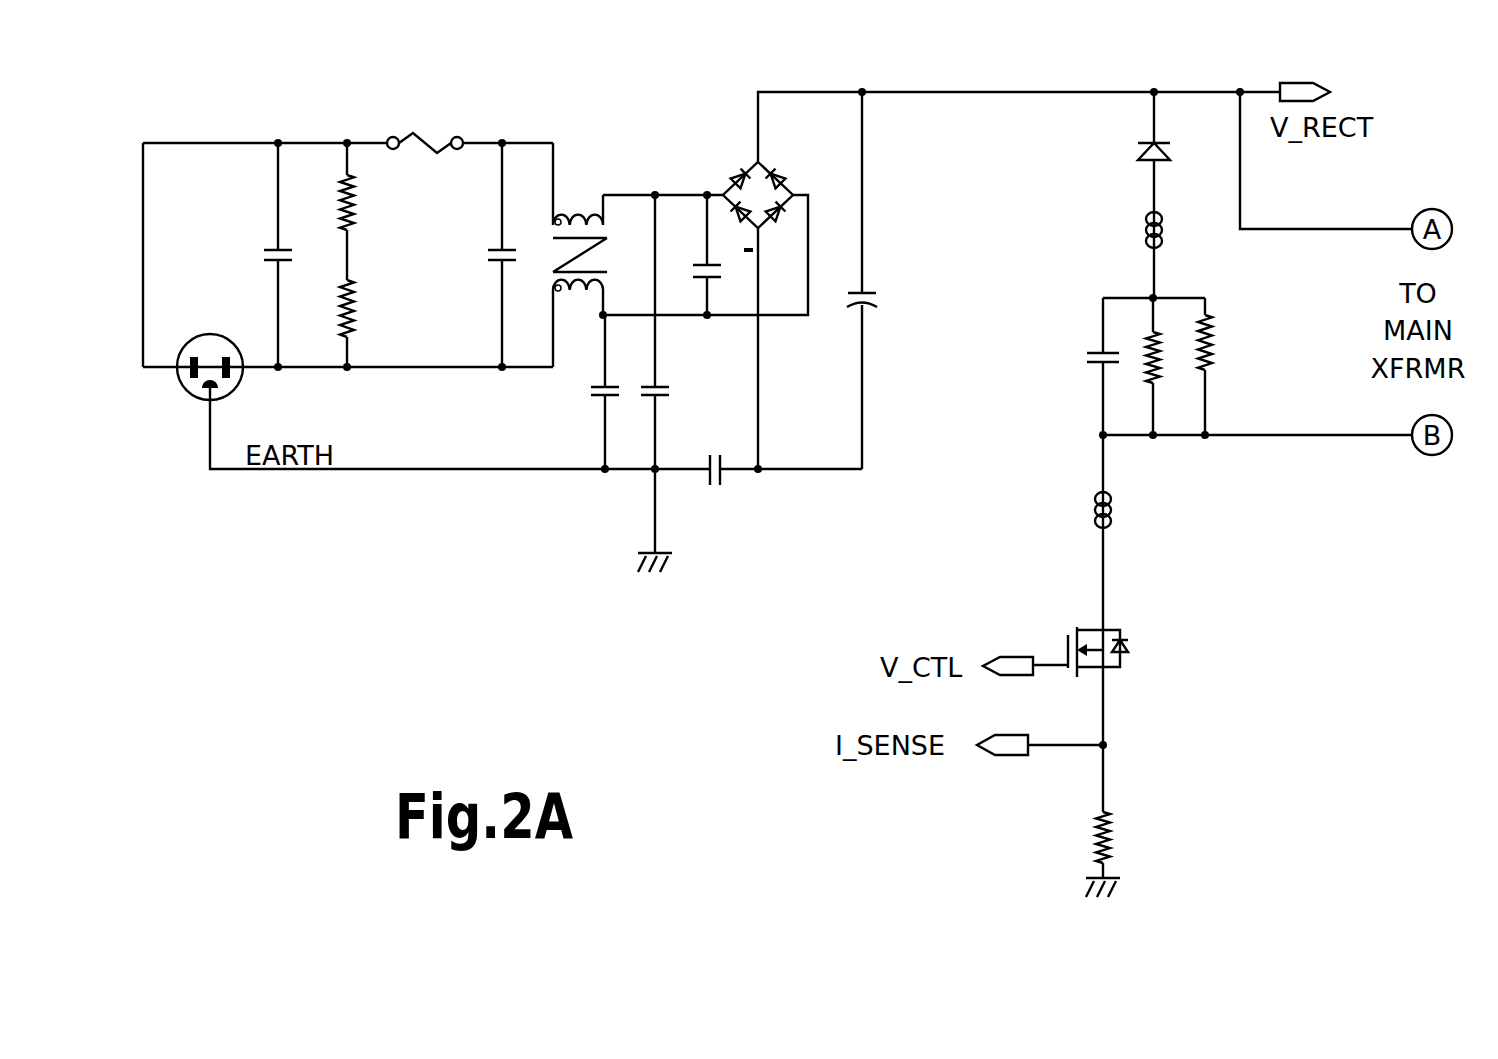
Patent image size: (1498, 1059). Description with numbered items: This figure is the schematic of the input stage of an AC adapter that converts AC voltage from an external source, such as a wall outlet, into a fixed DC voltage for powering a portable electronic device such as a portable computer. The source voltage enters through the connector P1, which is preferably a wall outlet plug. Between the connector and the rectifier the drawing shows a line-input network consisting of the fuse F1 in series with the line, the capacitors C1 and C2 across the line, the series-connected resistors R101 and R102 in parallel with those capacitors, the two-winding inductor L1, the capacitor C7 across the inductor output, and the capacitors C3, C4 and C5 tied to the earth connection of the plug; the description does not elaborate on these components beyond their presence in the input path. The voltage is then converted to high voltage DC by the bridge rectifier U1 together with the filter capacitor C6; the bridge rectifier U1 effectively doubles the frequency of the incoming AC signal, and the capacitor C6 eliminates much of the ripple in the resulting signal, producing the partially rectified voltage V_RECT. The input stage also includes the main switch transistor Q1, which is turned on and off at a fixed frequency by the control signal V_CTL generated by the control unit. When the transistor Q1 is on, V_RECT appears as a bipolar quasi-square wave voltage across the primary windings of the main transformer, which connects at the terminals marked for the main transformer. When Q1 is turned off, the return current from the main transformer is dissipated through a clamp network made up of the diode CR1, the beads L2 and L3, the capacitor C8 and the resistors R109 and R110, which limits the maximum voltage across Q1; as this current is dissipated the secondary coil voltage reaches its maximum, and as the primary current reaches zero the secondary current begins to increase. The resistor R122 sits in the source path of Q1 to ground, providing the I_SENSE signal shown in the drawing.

The connector P1 is at (228, 370).
The line filter capacitor 0.15uF C1 is at (228, 255).
The bleeder resistor 1M R101 is at (387, 211).
The bleeder resistor 1M R102 is at (387, 323).
The line filter capacitor 0.1uF C2 is at (460, 255).
The fuse 3.15A F1 is at (424, 113).
The common-mode choke / line filter inductor L1 is at (580, 255).
The filter capacitor .033uF C7 is at (701, 276).
The Y capacitor 4700pF C3 is at (553, 392).
The Y capacitor 4700pF C4 is at (701, 374).
The capacitor 1000pF C5 is at (735, 501).
The bridge rectifier U1 is at (734, 179).
The filter capacitor C6 is at (910, 290).
The clamp network diode CR1 is at (1094, 144).
The clamp network inductor L2 is at (1110, 235).
The clamp network capacitor C8 is at (1061, 366).
The clamp network resistor R109 is at (1168, 397).
The clamp network resistor R110 is at (1245, 366).
The clamp network inductor L3 is at (1058, 500).
The main switch transistor Q1 is at (1028, 616).
The current sense resistor .39 ohm 1W R122 is at (1062, 820).